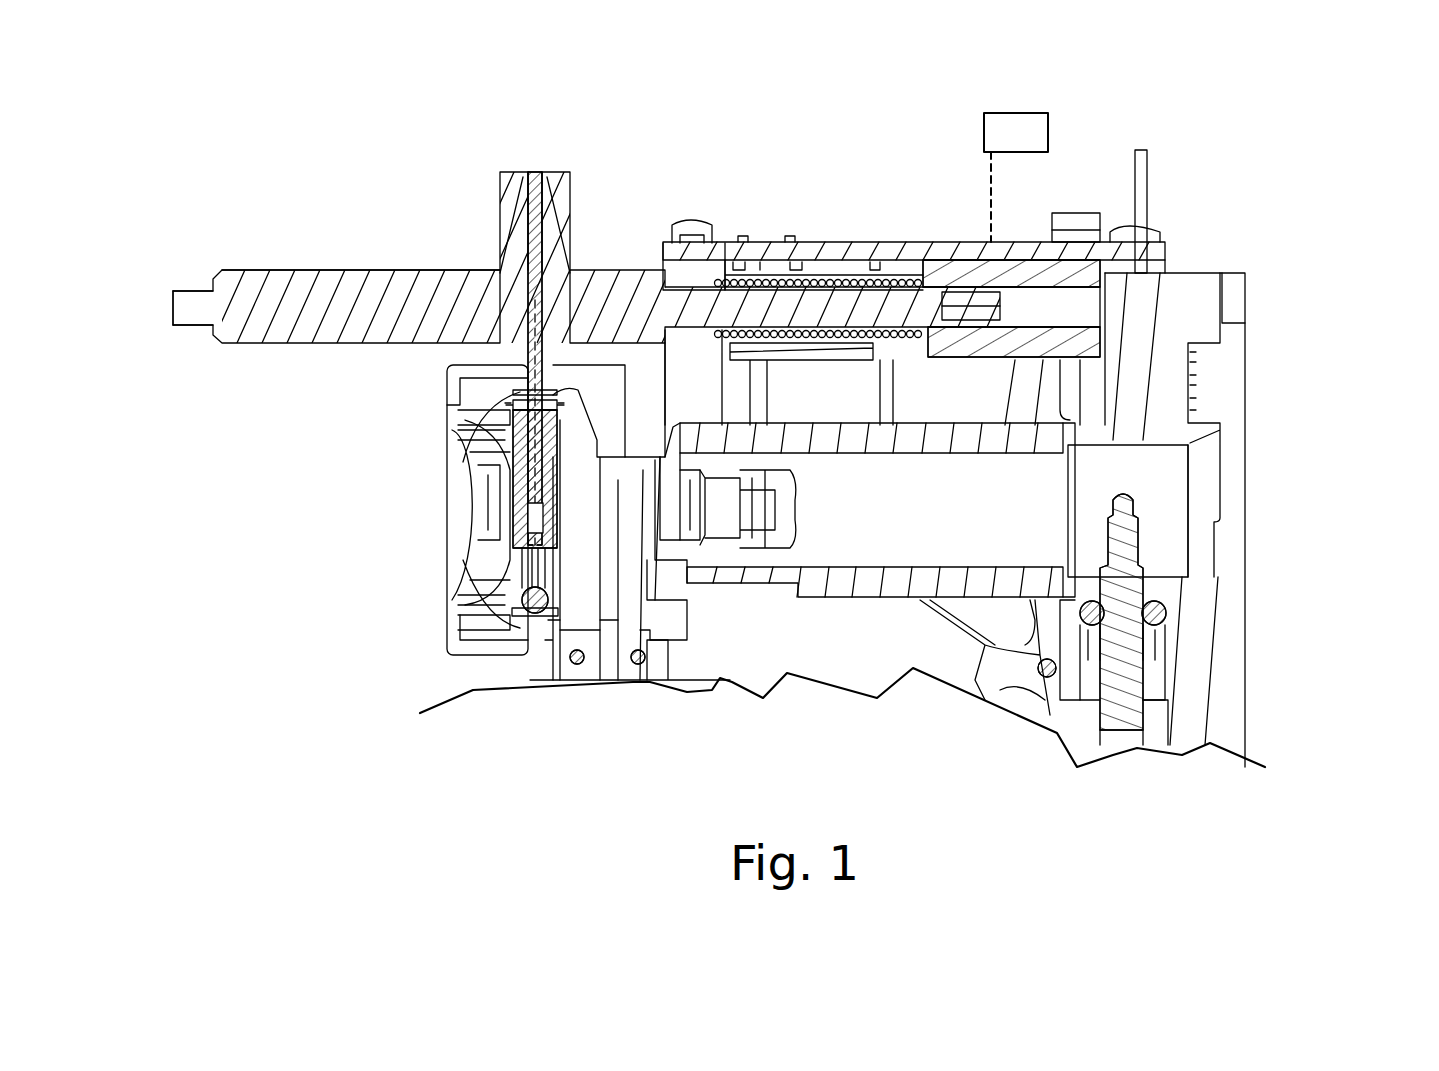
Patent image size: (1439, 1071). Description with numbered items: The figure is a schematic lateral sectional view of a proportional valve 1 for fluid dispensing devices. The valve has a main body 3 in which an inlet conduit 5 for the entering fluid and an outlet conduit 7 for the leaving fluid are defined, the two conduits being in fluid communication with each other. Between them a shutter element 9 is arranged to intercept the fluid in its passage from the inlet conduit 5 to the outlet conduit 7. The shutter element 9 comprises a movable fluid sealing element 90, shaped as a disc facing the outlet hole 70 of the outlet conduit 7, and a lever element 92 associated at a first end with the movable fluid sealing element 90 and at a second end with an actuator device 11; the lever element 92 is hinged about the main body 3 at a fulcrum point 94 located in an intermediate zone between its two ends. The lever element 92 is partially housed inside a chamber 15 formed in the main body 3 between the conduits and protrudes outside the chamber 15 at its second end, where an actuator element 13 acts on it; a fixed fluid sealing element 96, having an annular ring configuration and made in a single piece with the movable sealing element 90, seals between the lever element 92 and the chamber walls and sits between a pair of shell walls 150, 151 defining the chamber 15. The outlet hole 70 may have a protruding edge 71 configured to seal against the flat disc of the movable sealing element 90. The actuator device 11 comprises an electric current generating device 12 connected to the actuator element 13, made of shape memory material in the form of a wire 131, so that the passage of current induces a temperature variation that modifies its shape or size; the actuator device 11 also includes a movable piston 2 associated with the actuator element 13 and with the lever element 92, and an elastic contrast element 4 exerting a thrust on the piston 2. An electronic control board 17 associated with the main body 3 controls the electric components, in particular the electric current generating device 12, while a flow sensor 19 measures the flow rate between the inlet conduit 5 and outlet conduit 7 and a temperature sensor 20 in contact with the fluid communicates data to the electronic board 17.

The proportional valve 1 is at (166, 188).
The movable piston 2 is at (275, 288).
The main body 3 is at (870, 600).
The elastic contrast element 4 is at (880, 278).
The inlet conduit 5 is at (1158, 488).
The outlet conduit 7 is at (607, 660).
The shutter element 9 is at (522, 473).
The actuator device 11 is at (412, 264).
The electric current generating device 12 is at (1022, 113).
The actuator element 13 is at (167, 310).
The chamber 15 is at (558, 517).
The electronic control board 17 is at (957, 252).
The flow sensor 19 is at (746, 527).
The temperature sensor 20 is at (1127, 567).
The outlet hole 70 is at (578, 503).
The protruding edge 71 is at (562, 500).
The movable fluid sealing element 90 is at (505, 507).
The lever element 92 is at (538, 214).
The fulcrum point 94 is at (540, 405).
The fixed fluid sealing element 96 is at (515, 432).
The wire 131 is at (176, 302).
The shell wall 150 is at (503, 563).
The shell wall 151 is at (550, 448).